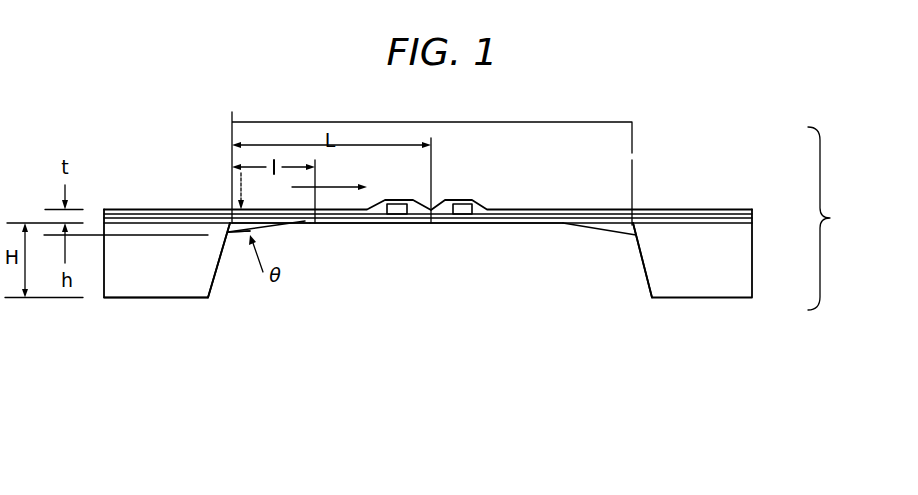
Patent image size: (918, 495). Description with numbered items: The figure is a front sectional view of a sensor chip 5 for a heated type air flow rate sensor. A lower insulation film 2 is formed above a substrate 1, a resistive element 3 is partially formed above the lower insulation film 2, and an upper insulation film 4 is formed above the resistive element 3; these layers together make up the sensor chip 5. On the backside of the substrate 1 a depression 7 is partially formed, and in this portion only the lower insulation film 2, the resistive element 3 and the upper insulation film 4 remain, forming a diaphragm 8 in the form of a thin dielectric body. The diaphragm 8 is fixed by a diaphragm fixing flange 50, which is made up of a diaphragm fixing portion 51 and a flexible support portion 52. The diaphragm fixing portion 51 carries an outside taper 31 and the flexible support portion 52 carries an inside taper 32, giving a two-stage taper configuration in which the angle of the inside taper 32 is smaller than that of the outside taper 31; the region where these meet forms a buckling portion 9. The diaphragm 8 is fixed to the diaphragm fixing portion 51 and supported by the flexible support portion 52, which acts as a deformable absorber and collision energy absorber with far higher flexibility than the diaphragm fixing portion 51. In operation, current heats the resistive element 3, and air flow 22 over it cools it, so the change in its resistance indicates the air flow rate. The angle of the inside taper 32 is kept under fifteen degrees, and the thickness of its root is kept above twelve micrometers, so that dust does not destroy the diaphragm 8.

The substrate 1 is at (728, 280).
The lower insulation film 2 is at (755, 218).
The resistive element 3 is at (420, 199).
The upper insulation film 4 is at (755, 210).
The sensor chip 5 is at (831, 218).
The depression 7 is at (432, 235).
The diaphragm 8 is at (432, 161).
The buckling portion 9 is at (240, 224).
The air flow 22 is at (330, 187).
The taper 31 is at (213, 285).
The taper 32 is at (280, 227).
The diaphragm fixing flange 50 is at (163, 312).
The diaphragm fixing portion 51 is at (117, 285).
The flexible support portion 52 is at (277, 223).